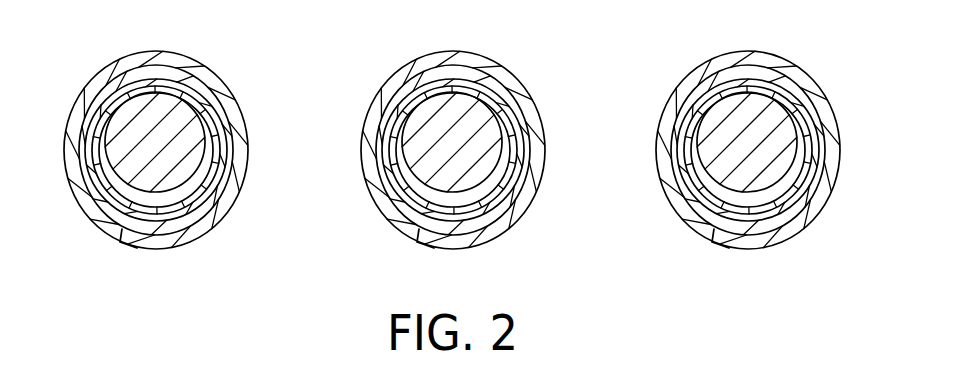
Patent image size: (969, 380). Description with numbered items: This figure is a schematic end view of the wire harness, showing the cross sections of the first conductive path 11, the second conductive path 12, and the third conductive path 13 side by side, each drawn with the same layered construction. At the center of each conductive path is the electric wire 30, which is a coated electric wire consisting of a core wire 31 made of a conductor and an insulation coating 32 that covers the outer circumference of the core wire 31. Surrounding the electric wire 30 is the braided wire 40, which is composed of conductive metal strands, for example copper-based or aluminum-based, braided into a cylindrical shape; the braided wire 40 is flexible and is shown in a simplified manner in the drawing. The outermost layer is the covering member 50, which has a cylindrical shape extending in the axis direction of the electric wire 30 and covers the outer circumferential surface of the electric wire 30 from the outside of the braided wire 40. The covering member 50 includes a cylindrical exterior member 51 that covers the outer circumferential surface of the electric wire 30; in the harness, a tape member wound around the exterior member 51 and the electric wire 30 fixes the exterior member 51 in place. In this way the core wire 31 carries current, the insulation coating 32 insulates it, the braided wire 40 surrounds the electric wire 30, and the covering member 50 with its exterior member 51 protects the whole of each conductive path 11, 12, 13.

The first conductive path 11 is at (221, 72).
The second conductive path 12 is at (518, 72).
The third conductive path 13 is at (813, 72).
The electric wire 30 is at (232, 99).
The core wire 31 is at (94, 206).
The insulation coating 32 is at (122, 95).
The braided wire 40 is at (181, 214).
The covering member 50 is at (243, 187).
The exterior member 51 is at (222, 210).